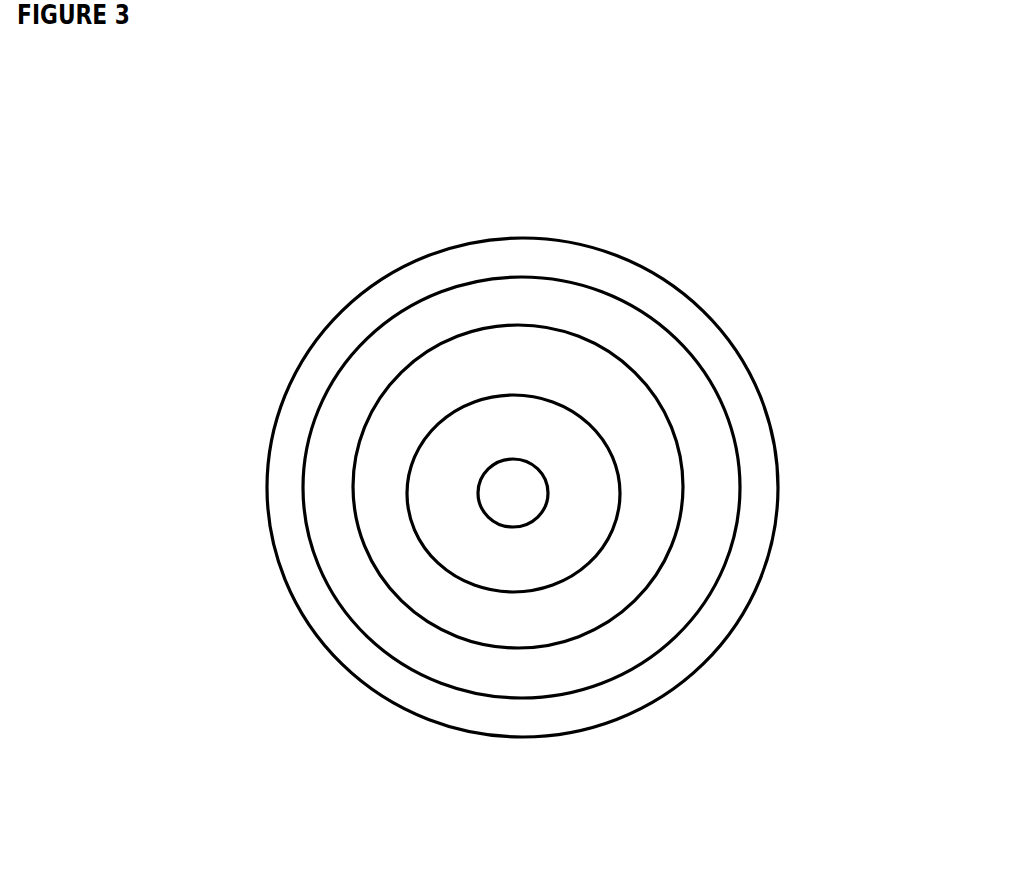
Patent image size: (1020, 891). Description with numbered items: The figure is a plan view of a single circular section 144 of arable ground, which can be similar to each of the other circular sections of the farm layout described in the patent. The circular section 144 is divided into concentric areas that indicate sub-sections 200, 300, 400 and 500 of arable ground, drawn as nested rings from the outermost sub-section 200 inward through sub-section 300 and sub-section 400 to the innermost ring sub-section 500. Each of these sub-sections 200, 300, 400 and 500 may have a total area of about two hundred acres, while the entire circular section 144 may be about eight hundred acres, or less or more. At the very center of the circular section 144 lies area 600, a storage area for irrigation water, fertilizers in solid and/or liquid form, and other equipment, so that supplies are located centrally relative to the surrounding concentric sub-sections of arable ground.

The circular section 144 is at (267, 497).
The sub-section 200 is at (345, 343).
The sub-section 300 is at (463, 313).
The sub-section 400 is at (517, 365).
The sub-section 500 is at (548, 445).
The storage area 600 is at (517, 487).